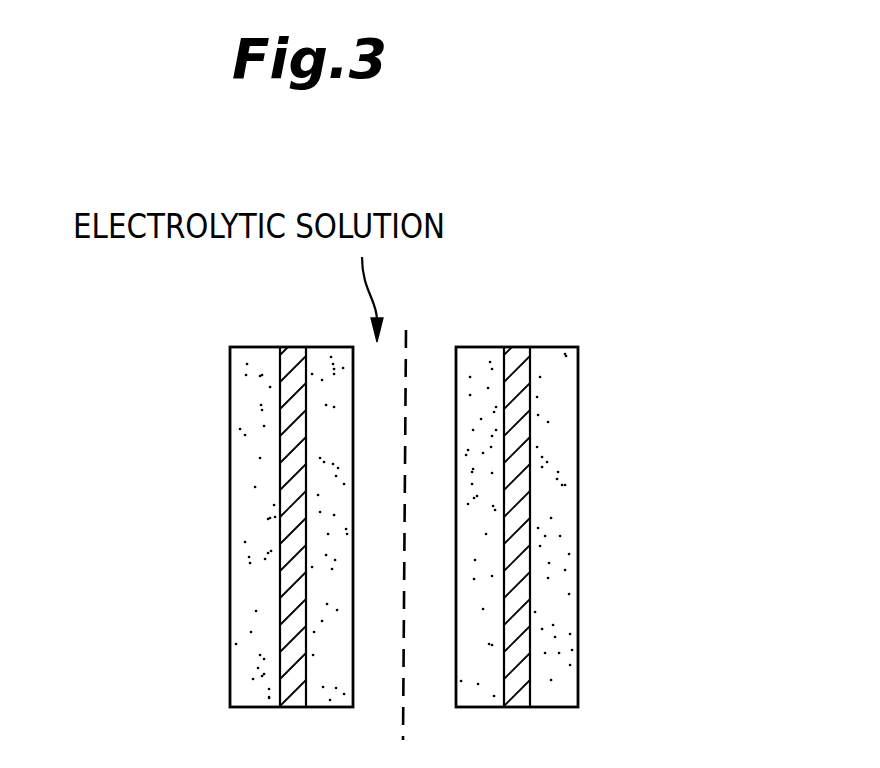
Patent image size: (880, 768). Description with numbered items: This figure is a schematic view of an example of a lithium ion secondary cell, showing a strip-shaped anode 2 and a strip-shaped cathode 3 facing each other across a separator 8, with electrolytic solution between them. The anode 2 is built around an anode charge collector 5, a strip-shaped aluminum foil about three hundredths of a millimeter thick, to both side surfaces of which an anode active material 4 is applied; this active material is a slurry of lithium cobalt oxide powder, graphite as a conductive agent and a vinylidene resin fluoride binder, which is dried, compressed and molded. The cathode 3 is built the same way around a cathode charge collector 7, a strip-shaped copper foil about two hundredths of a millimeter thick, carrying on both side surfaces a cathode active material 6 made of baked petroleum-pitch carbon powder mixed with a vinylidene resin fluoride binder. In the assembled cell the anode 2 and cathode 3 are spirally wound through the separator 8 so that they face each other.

The anode 2 is at (200, 527).
The cathode 3 is at (615, 527).
The anode active material 4 is at (318, 590).
The anode charge collector 5 is at (288, 441).
The cathode active material 6 is at (703, 397).
The cathode charge collector 7 is at (525, 425).
The separator 8 is at (407, 338).